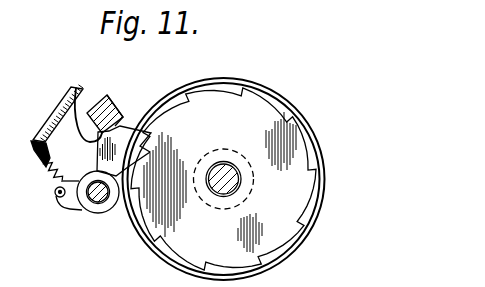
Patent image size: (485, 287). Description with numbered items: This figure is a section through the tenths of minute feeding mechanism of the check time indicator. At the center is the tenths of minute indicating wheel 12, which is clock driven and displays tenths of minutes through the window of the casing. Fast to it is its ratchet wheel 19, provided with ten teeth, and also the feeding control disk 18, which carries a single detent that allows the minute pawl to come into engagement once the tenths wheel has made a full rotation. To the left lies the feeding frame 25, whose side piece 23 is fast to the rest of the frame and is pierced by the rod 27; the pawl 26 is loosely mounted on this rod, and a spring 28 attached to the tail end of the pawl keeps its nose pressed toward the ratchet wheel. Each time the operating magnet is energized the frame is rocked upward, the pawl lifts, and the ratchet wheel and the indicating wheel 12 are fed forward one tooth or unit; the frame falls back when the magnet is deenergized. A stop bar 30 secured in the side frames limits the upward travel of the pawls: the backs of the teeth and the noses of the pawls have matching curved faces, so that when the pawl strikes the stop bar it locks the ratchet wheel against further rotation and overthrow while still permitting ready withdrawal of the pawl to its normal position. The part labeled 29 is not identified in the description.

The tenths of minute indicating wheel 12 is at (302, 122).
The feeding control disk 18 is at (312, 155).
The ratchet wheel 19 is at (305, 178).
The side piece 23 is at (87, 111).
The feeding frame 25 is at (66, 107).
The pawl 26 is at (131, 148).
The rod 27 is at (99, 201).
The spring 28 is at (44, 178).
The hub shaft 29 is at (212, 191).
The stop bar 30 is at (121, 114).